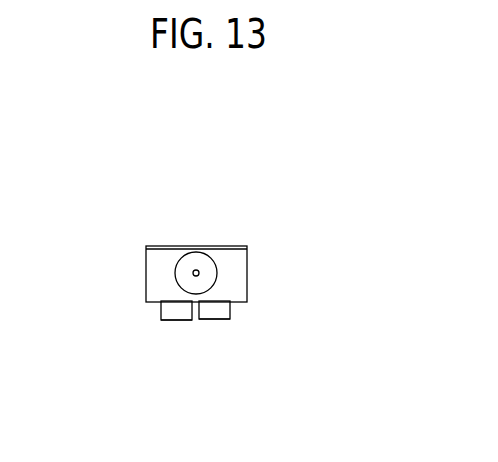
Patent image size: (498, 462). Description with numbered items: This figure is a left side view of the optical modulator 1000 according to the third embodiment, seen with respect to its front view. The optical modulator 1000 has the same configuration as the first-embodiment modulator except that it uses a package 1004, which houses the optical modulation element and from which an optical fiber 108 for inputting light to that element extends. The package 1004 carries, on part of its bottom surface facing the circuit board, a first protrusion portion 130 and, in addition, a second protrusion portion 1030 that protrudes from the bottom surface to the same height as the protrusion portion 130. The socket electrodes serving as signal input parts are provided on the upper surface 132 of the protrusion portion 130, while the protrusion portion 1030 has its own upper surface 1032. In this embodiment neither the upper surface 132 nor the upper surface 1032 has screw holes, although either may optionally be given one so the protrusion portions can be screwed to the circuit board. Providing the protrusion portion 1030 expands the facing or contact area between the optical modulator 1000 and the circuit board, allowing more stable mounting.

The optical modulator 1000 is at (143, 193).
The package 1004 is at (248, 274).
The optical fiber 108 is at (232, 237).
The protrusion portion 1030 is at (128, 331).
The upper surface 1032 is at (162, 369).
The protrusion portion 130 is at (255, 328).
The upper surface 132 is at (238, 361).